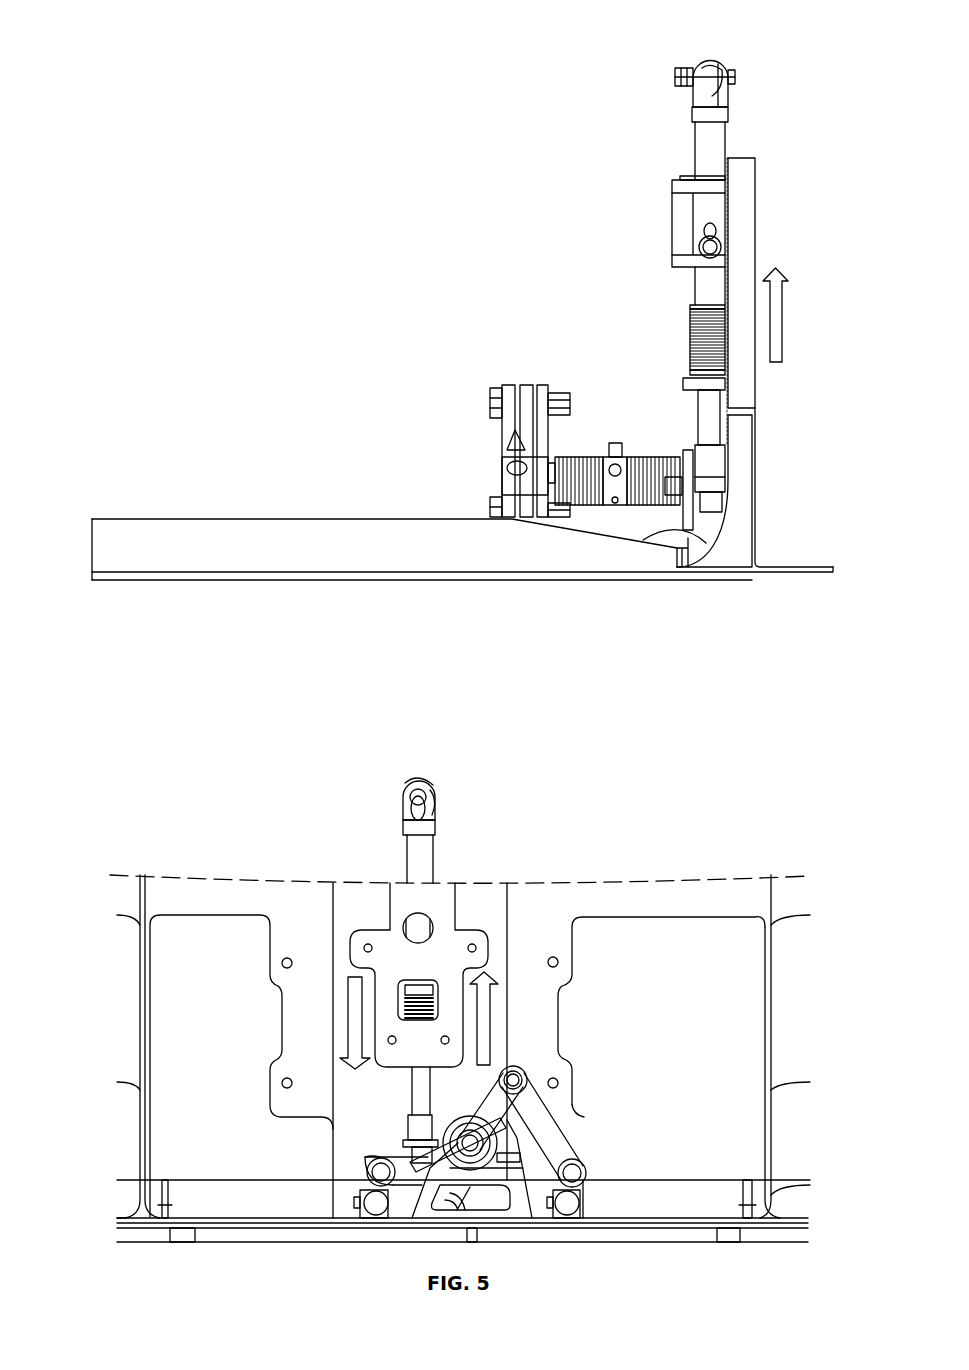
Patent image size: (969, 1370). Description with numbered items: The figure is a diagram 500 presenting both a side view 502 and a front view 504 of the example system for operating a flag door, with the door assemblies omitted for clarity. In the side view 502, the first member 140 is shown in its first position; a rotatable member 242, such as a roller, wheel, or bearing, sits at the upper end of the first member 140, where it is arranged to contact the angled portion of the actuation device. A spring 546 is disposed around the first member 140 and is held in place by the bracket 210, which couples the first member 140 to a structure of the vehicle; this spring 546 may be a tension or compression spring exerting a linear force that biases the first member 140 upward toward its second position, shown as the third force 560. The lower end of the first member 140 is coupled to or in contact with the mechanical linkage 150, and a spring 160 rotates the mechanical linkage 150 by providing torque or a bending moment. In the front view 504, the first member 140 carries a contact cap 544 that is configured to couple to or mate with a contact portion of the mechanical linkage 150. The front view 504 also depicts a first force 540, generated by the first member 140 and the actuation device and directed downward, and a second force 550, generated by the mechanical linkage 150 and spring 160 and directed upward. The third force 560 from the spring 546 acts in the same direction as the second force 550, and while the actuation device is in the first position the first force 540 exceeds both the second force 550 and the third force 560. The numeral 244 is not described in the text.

The diagram 500 is at (110, 78).
The side view 502 is at (398, 160).
The front view 504 is at (366, 750).
The upper clevis 244 is at (710, 62).
The first member 140 is at (698, 157).
The spring 546 is at (691, 337).
The third force 560 is at (773, 317).
The mechanical linkage 150 is at (510, 388).
The spring 160 is at (657, 457).
The rotatable member 242 is at (432, 787).
The bracket 210 is at (447, 897).
The first force 540 is at (357, 1020).
The second force 550 is at (482, 1020).
The contact cap 544 is at (422, 1122).